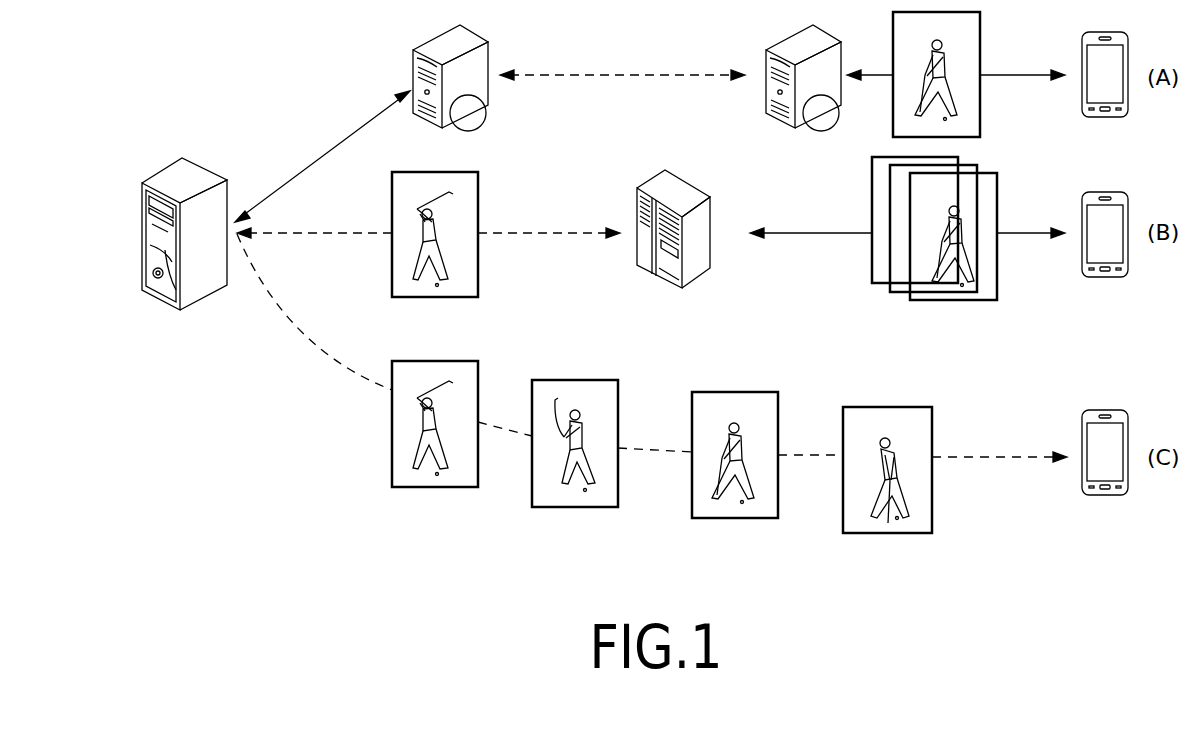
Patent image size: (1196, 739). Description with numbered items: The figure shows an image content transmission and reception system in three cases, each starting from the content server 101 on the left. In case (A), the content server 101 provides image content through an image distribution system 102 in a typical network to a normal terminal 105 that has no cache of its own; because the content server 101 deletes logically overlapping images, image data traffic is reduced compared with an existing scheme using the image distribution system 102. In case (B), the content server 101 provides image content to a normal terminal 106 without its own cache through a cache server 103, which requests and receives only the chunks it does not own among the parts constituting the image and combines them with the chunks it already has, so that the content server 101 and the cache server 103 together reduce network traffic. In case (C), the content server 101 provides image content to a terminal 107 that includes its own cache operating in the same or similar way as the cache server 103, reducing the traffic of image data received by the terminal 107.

The content server 101 is at (186, 157).
The image distribution system 102 is at (479, 34).
The cache server 103 is at (692, 181).
The normal terminal 105 is at (1105, 32).
The normal terminal 106 is at (1105, 192).
The terminal 107 is at (1106, 410).